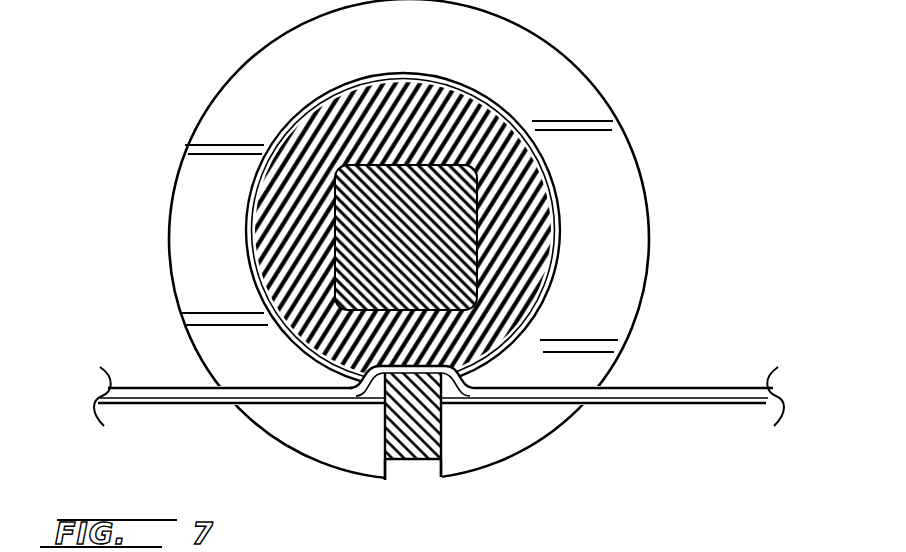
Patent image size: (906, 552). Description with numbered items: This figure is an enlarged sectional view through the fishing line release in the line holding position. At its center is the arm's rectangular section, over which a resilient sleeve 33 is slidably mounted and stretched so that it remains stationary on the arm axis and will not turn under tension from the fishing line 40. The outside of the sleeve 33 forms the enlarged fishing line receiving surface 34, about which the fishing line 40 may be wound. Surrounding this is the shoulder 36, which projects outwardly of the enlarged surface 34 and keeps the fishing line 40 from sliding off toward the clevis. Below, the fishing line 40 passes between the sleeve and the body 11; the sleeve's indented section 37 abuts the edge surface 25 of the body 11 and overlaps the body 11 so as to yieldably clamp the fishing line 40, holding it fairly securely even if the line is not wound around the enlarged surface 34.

The body 11 is at (412, 462).
The edge surface 25 is at (386, 417).
The resilient sleeve 33 is at (405, 82).
The enlarged fishing line receiving surface 34 is at (557, 205).
The shoulder 36 is at (562, 88).
The indented section 37 is at (427, 470).
The fishing line 40 is at (681, 405).